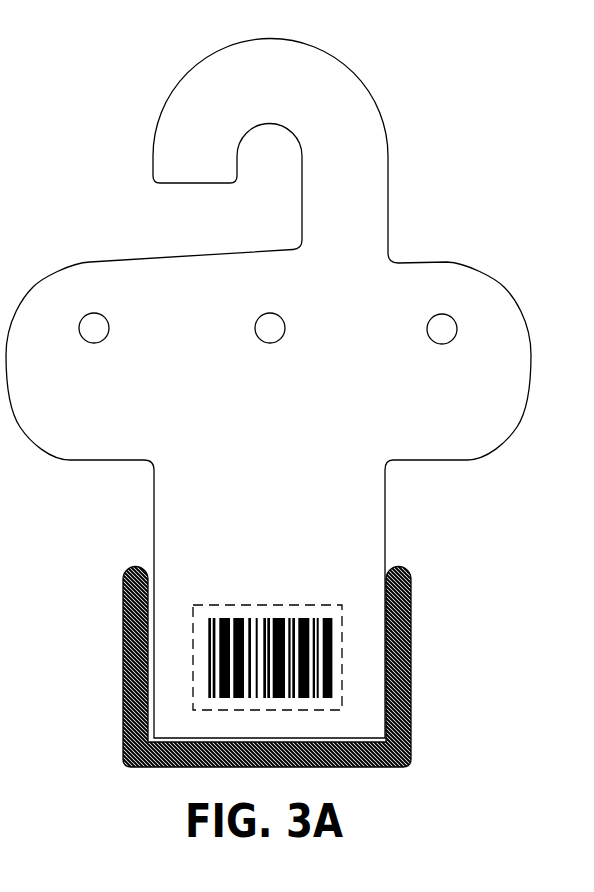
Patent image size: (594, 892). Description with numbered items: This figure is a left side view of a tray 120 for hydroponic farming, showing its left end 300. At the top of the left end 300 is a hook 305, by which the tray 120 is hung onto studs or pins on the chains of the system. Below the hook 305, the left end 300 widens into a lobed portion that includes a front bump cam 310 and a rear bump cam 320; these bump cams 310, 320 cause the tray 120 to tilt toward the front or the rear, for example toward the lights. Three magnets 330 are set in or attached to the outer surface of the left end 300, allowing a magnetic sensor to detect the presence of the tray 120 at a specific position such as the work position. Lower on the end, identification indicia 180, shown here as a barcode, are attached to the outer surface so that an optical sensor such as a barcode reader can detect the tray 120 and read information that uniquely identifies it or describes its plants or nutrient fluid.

The tray 120 is at (412, 713).
The identification indicia 180 is at (285, 606).
The left end 300 is at (275, 388).
The hook 305 is at (162, 121).
The front bump cam 310 is at (500, 282).
The rear bump cam 320 is at (61, 270).
The magnets 330 is at (108, 322).